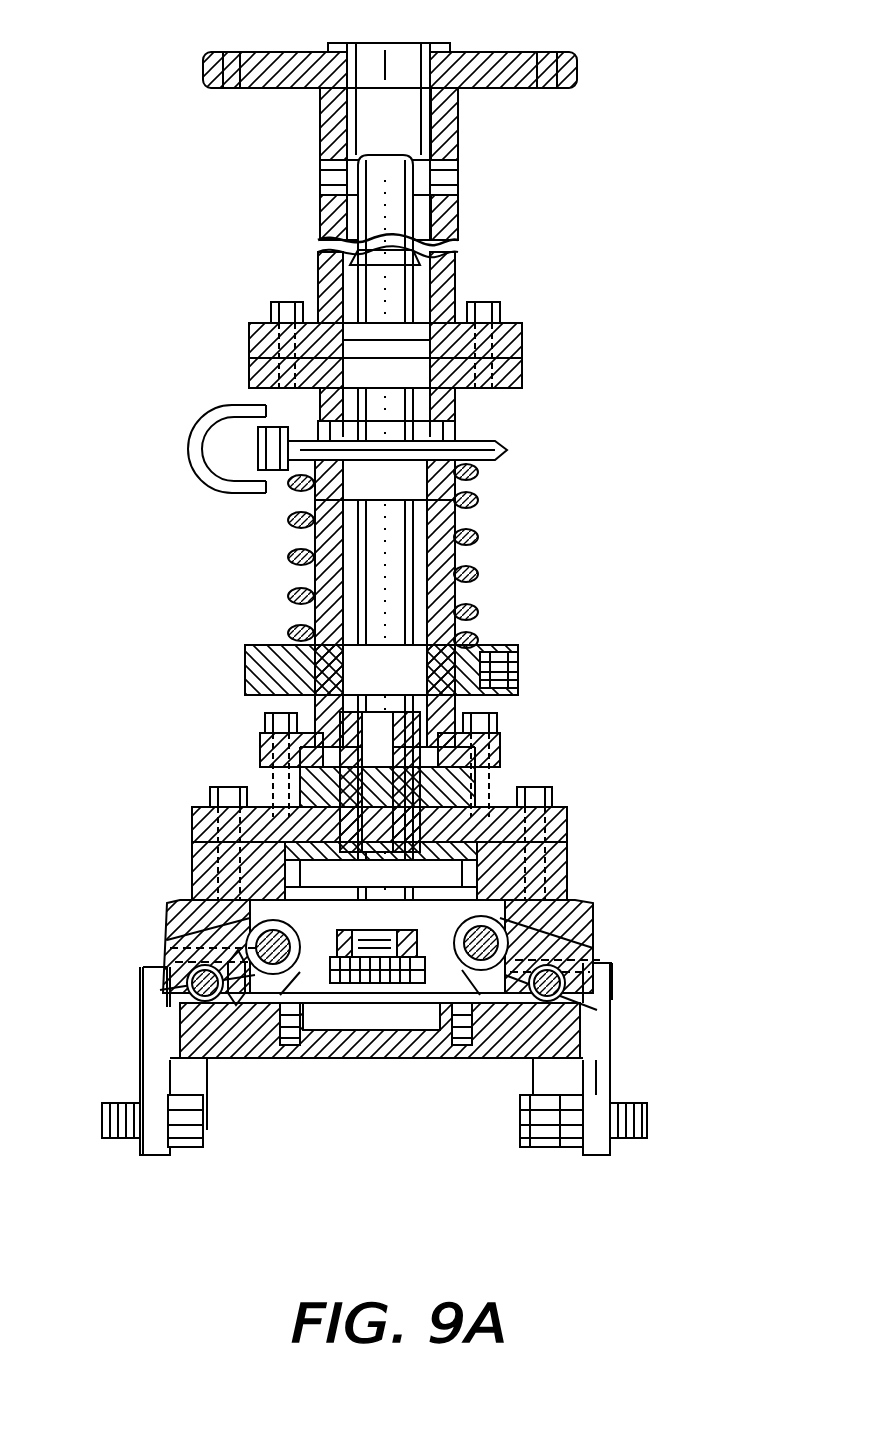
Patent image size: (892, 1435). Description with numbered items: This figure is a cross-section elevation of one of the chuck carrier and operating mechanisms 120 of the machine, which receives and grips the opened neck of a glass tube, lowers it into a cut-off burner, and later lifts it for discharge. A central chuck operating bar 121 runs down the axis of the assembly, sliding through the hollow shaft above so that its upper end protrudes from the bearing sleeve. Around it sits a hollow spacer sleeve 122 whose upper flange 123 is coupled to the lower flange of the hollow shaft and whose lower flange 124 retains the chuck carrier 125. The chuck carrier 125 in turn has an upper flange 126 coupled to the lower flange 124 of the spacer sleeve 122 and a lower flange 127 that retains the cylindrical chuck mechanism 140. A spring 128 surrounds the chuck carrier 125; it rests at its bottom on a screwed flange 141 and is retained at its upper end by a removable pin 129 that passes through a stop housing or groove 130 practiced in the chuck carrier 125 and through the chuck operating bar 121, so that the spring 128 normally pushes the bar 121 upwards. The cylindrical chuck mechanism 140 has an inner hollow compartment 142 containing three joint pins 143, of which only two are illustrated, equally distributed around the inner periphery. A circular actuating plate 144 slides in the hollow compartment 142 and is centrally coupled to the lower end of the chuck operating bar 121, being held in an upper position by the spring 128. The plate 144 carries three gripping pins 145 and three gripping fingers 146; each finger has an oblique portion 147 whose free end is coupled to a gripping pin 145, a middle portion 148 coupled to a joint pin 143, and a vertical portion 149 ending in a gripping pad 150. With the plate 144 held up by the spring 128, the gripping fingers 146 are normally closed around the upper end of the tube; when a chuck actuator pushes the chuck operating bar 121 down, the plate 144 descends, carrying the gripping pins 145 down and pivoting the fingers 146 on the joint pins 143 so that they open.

The chuck carrier and operating mechanism 120 is at (650, 558).
The central chuck operating bar 121 is at (413, 214).
The hollow spacer sleeve 122 is at (460, 124).
The upper flange 123 is at (578, 66).
The lower flange 124 is at (514, 332).
The chuck carrier 125 is at (480, 578).
The upper flange 126 is at (524, 373).
The lower flange 127 is at (567, 812).
The spring 128 is at (478, 540).
The removable pin 129 is at (505, 448).
The stop housing or groove 130 is at (435, 470).
The cylindrical chuck mechanism 140 is at (567, 876).
The screwed flange 141 is at (520, 672).
The inner hollow compartment 142 is at (217, 843).
The joint pin 143 is at (145, 995).
The circular actuating plate 144 is at (437, 937).
The gripping pin 145 is at (255, 930).
The gripping finger 146 is at (157, 1160).
The oblique portion 147 is at (170, 948).
The middle portion 148 is at (590, 1015).
The vertical portion 149 is at (590, 1068).
The gripping pad 150 is at (205, 1145).